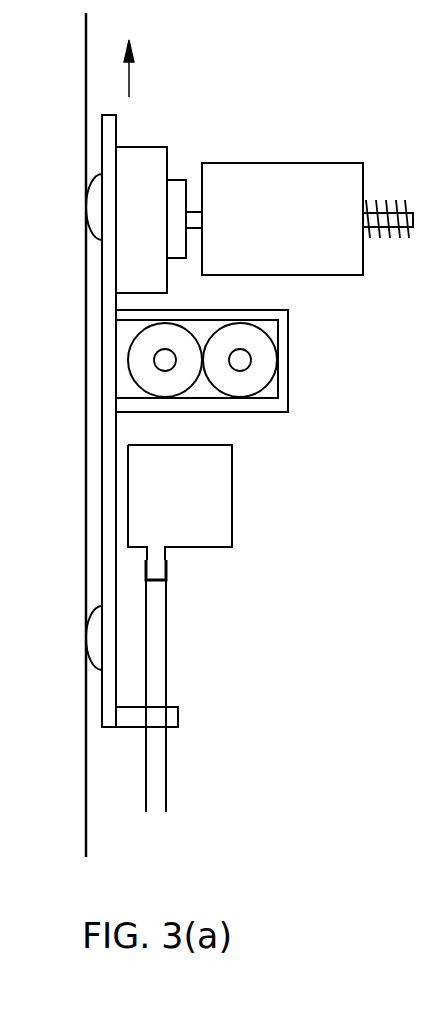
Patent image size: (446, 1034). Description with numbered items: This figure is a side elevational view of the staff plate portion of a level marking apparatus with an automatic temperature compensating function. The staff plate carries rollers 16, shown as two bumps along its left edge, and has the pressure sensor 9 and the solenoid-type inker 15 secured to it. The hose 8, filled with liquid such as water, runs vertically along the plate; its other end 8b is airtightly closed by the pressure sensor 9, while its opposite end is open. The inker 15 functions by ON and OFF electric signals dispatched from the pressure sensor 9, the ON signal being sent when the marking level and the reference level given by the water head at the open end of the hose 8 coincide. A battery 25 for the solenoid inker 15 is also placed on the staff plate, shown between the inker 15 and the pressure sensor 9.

The hose 8 is at (167, 782).
The other end of the hose 8b is at (166, 562).
The pressure sensor 9 is at (232, 510).
The solenoid-type inker 15 is at (267, 182).
The rollers 16 is at (88, 211).
The battery 25 is at (289, 362).